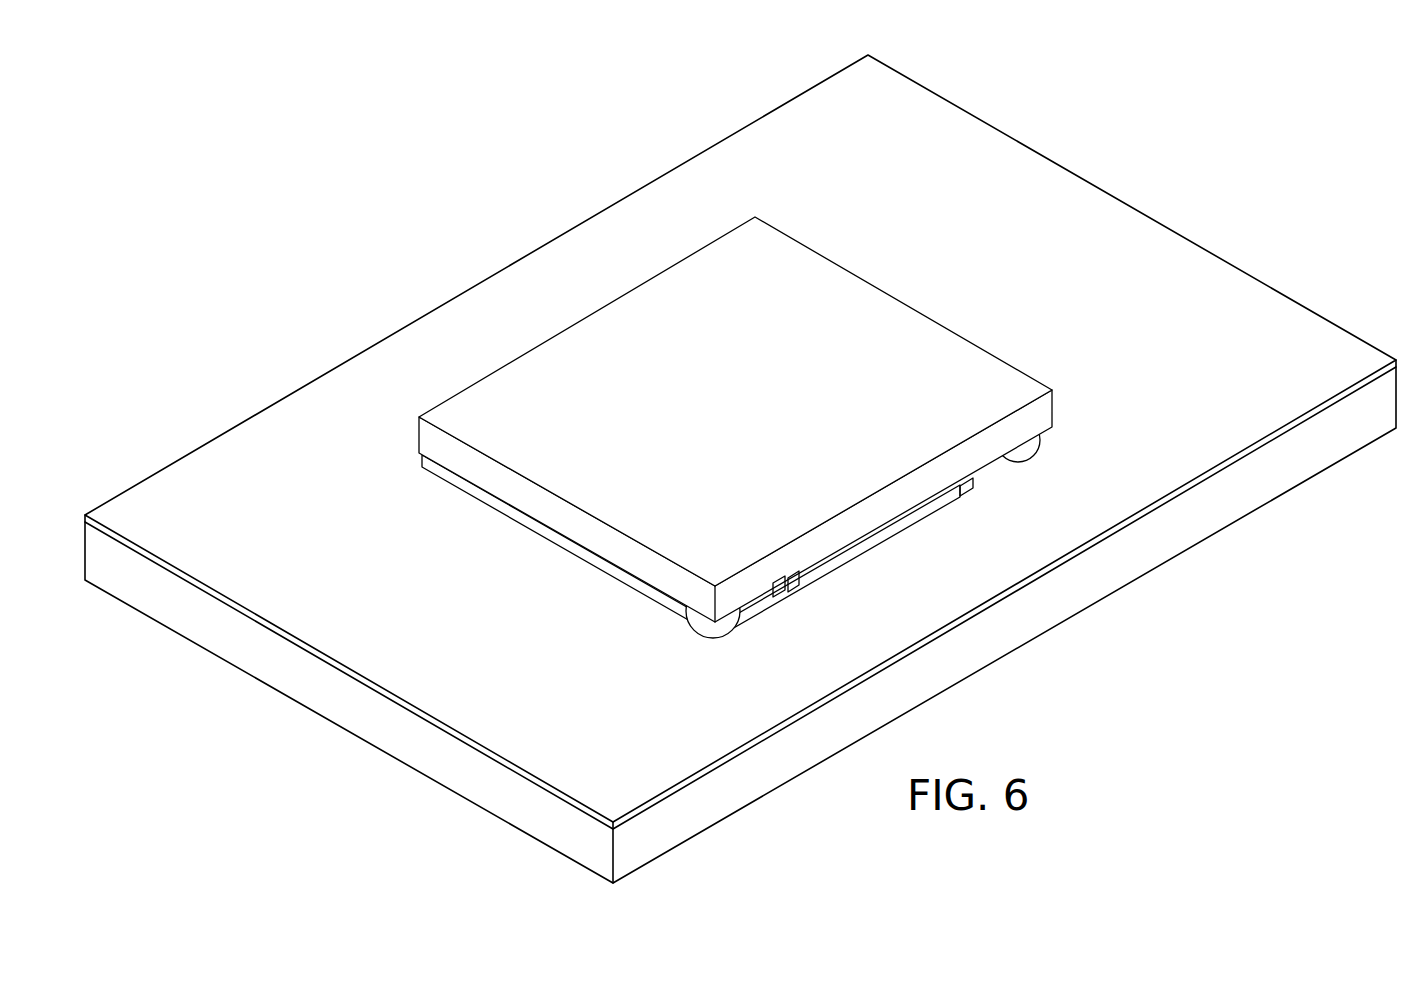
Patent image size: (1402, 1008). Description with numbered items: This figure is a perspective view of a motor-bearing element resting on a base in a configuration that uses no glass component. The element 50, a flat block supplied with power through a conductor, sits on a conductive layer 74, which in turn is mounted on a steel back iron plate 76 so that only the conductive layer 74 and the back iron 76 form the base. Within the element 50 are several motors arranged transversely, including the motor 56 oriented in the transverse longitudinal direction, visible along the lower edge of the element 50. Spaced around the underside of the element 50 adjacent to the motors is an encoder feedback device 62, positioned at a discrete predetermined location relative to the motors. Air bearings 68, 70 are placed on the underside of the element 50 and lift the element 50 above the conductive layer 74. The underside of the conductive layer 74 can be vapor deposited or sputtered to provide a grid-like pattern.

The element 50 is at (726, 387).
The motor 56 is at (867, 542).
The encoder feedback device 62 is at (775, 595).
The air bearing 68 is at (697, 625).
The air bearing 70 is at (1030, 450).
The conductive layer 74 is at (177, 468).
The steel back iron plate 76 is at (515, 817).